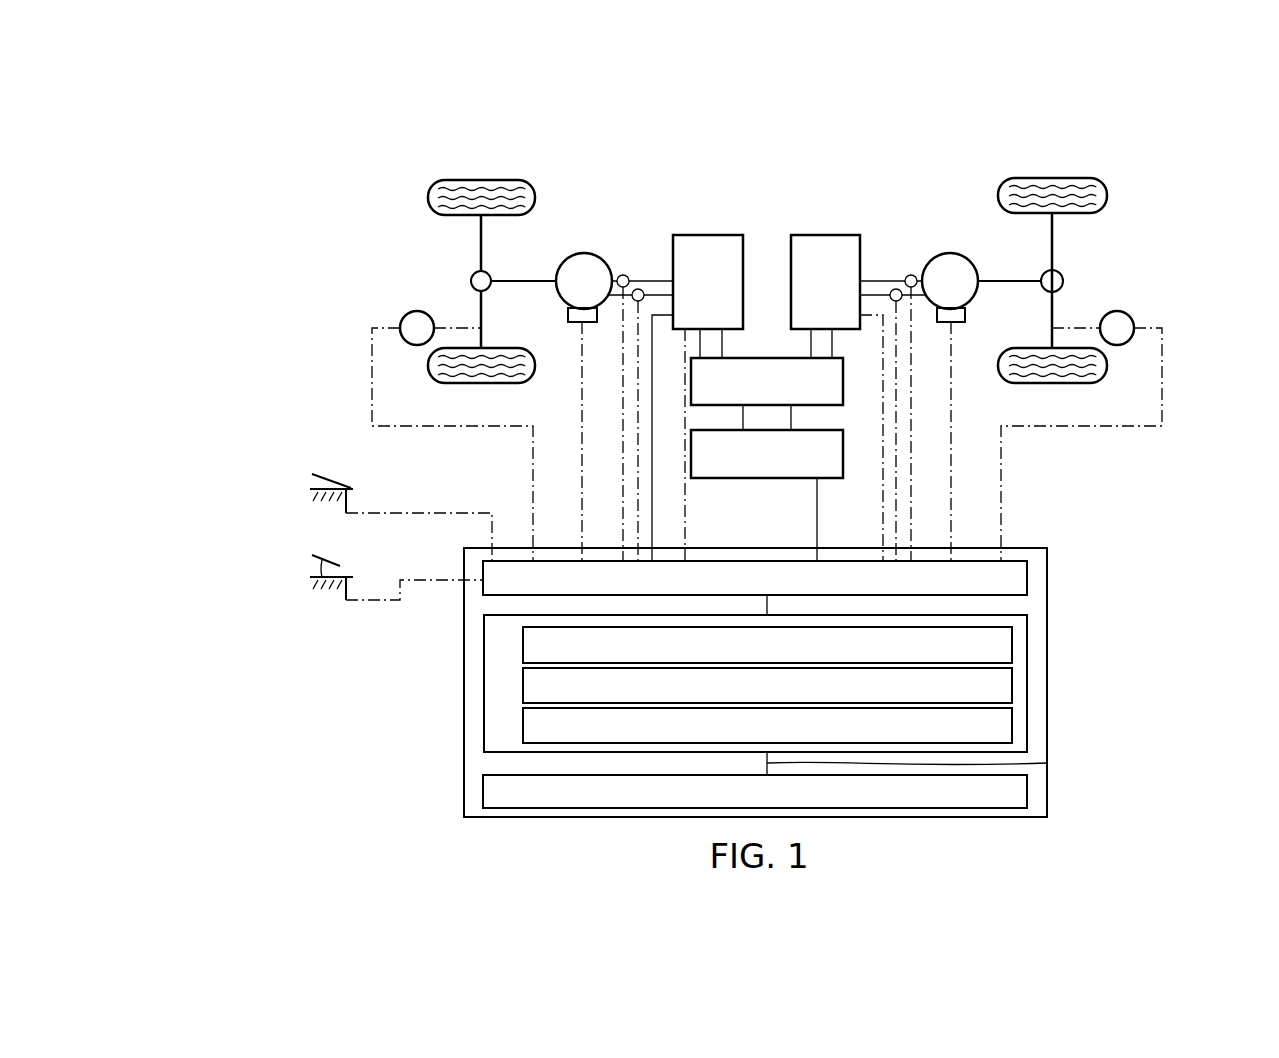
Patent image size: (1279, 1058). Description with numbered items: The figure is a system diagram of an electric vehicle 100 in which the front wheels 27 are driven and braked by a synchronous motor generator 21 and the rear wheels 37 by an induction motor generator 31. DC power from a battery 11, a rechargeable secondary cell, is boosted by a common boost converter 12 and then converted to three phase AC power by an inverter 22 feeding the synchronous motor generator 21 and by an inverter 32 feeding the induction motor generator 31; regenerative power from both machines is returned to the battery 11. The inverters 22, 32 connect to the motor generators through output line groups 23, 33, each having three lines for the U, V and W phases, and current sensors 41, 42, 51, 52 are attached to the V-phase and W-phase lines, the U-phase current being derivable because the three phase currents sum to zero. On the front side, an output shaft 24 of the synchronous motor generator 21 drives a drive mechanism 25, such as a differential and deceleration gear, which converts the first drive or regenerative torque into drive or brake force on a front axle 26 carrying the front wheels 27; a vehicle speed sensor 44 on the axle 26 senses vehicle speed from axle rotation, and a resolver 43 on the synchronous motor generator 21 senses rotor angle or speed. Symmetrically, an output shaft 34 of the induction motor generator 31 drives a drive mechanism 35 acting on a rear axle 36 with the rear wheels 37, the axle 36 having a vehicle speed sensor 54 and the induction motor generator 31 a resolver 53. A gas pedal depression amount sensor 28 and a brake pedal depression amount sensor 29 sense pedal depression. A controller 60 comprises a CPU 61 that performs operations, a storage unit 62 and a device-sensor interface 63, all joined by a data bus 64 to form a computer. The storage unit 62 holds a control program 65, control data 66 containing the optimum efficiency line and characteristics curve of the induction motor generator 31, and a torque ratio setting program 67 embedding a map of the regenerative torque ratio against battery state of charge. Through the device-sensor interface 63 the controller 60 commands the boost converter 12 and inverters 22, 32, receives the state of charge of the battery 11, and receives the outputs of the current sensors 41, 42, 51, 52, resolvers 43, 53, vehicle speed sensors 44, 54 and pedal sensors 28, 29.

The electric vehicle 100 is at (1177, 135).
The battery 11 is at (762, 478).
The boost converter 12 is at (765, 358).
The synchronous motor generator 21 is at (584, 253).
The inverter 22 is at (708, 235).
The output line group 23 is at (641, 289).
The output shaft 24 is at (527, 281).
The drive mechanism 25 is at (471, 279).
The front axle 26 is at (481, 236).
The front wheels 27 is at (481, 180).
The gas pedal depression amount sensor 28 is at (300, 483).
The brake pedal depression amount sensor 29 is at (300, 568).
The induction motor generator 31 is at (950, 253).
The inverter 32 is at (825, 235).
The output line group 33 is at (880, 266).
The output shaft 34 is at (1015, 281).
The drive mechanism 35 is at (1063, 278).
The rear axle 36 is at (1055, 236).
The rear wheels 37 is at (1072, 178).
The current sensor 41 is at (655, 266).
The current sensor 42 is at (623, 275).
The resolver 43 is at (568, 315).
The vehicle speed sensor 44 is at (402, 320).
The current sensor 51 is at (896, 289).
The current sensor 52 is at (911, 275).
The resolver 53 is at (965, 315).
The vehicle speed sensor 54 is at (1133, 320).
The controller 60 is at (1033, 547).
The CPU 61 is at (1027, 790).
The storage unit 62 is at (1027, 665).
The device-sensor interface 63 is at (1027, 580).
The data bus 64 is at (1047, 763).
The control program 65 is at (1012, 723).
The control data 66 is at (1012, 683).
The torque ratio setting program 67 is at (1012, 636).